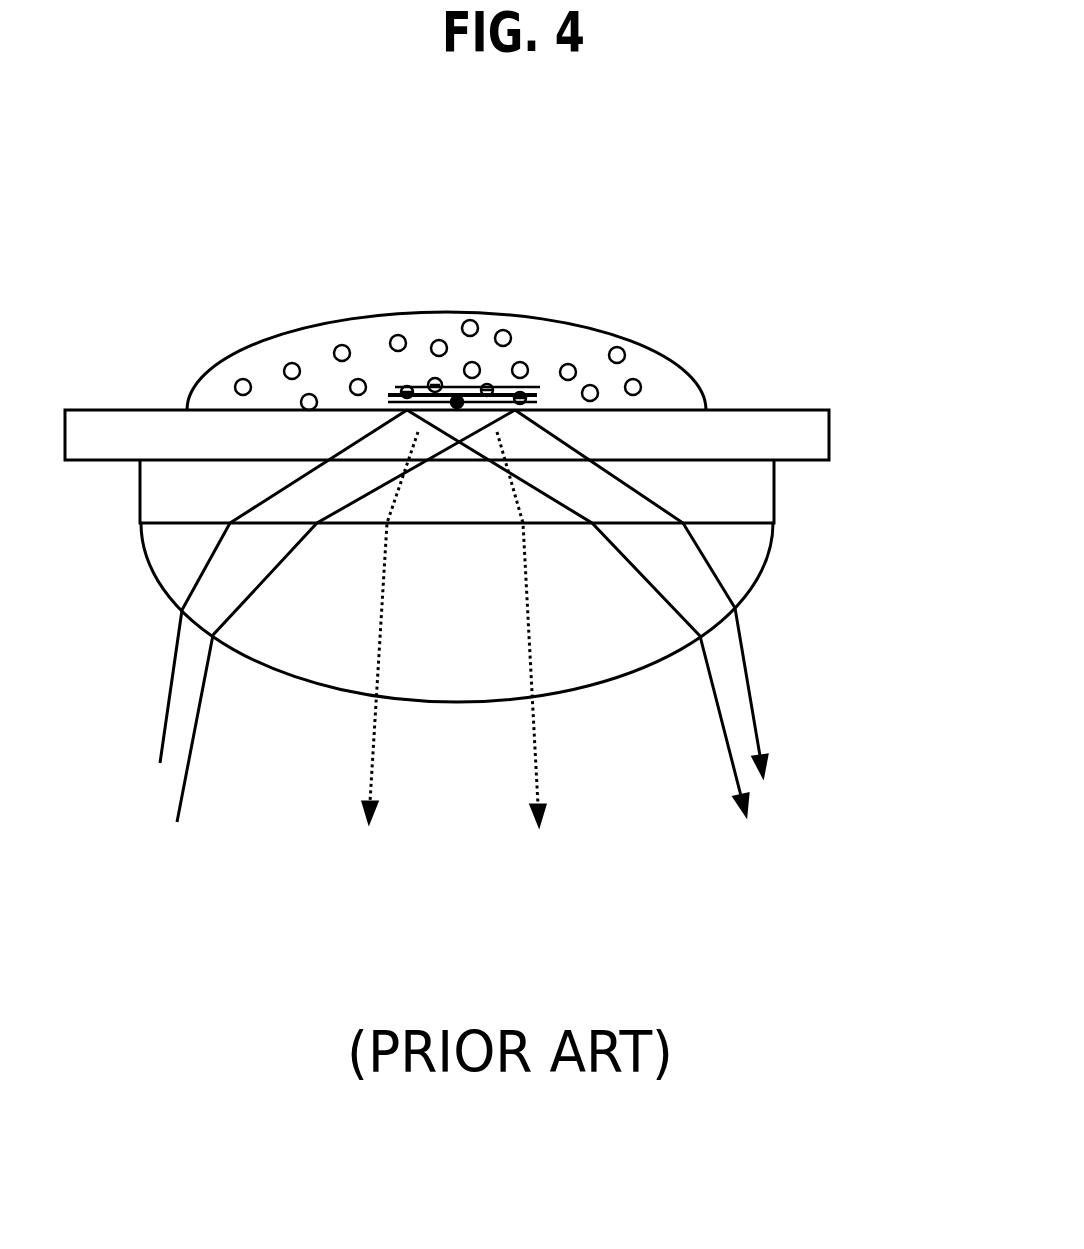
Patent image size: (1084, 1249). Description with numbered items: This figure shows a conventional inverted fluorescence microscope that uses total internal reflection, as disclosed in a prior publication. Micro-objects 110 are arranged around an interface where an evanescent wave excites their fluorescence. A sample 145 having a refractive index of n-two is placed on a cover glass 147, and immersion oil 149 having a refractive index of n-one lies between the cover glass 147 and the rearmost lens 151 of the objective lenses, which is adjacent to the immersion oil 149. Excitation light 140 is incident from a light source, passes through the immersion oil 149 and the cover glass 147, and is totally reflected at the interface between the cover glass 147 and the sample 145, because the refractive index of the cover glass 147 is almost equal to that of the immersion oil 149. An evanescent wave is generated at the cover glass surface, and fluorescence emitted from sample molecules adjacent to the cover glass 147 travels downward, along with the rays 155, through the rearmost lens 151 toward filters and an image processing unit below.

The micro-objects 110 is at (510, 336).
The sample 145 is at (670, 373).
The cover glass 147 is at (793, 408).
The immersion oil 149 is at (773, 507).
The rearmost lens of objective lenses 151 is at (757, 587).
The excitation light 140 is at (750, 693).
The on-axis light rays 155 is at (540, 750).